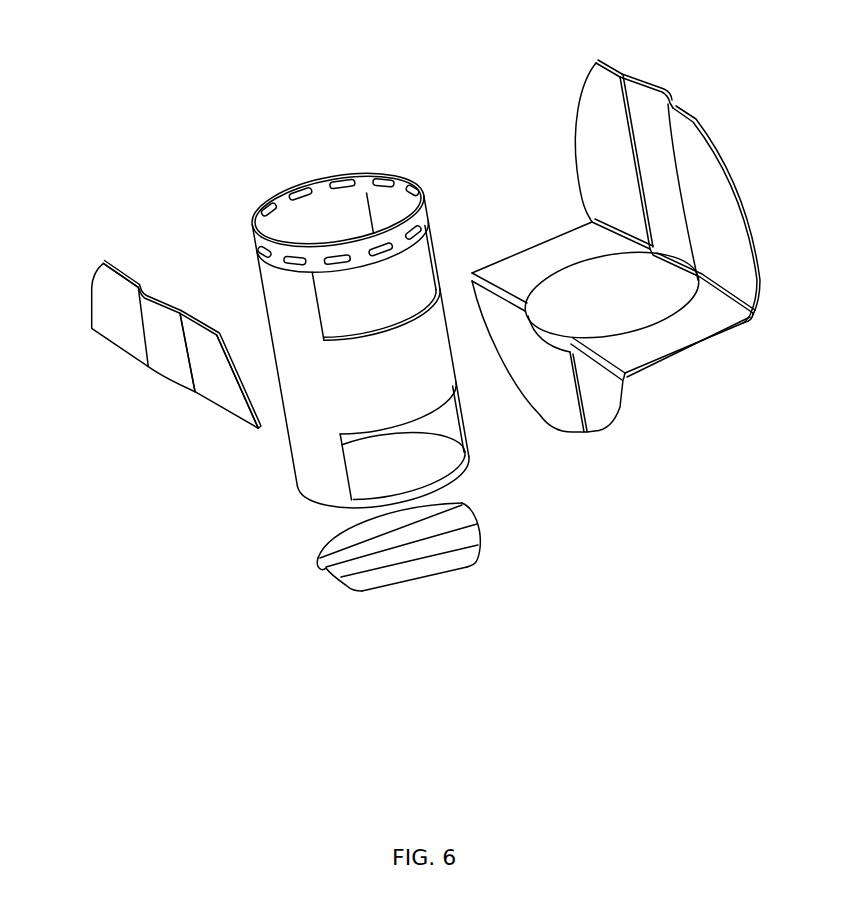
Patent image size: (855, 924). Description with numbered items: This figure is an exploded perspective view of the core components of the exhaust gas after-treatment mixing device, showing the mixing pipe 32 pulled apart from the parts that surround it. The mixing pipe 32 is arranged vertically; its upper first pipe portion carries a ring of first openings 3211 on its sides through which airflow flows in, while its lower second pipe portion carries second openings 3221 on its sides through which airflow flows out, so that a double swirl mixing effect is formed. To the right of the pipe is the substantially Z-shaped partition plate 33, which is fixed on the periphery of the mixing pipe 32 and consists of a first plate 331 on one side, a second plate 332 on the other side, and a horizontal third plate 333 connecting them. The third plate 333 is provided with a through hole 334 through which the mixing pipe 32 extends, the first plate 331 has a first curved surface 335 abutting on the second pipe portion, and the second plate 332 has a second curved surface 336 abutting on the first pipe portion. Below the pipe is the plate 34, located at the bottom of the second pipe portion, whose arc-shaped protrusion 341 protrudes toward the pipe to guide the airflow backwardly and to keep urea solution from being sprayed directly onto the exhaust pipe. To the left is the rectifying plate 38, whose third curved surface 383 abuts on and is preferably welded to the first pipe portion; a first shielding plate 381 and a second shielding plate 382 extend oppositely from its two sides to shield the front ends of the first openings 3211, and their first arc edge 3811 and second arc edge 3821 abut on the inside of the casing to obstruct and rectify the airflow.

The mixing pipe 32 is at (407, 199).
The first openings 3211 is at (323, 222).
The second openings 3221 is at (432, 458).
The partition plate 33 is at (633, 264).
The first plate 331 is at (603, 403).
The second plate 332 is at (723, 220).
The third plate 333 is at (692, 333).
The through hole 334 is at (590, 290).
The first curved surface 335 is at (562, 420).
The second curved surface 336 is at (650, 97).
The plate 34 is at (346, 589).
The arc-shaped protrusion 341 is at (375, 547).
The rectifying plate 38 is at (150, 322).
The first shielding plate 381 is at (88, 271).
The first arc edge 3811 is at (90, 288).
The second shielding plate 382 is at (226, 331).
The second arc edge 3821 is at (243, 377).
The third curved surface 383 is at (173, 378).